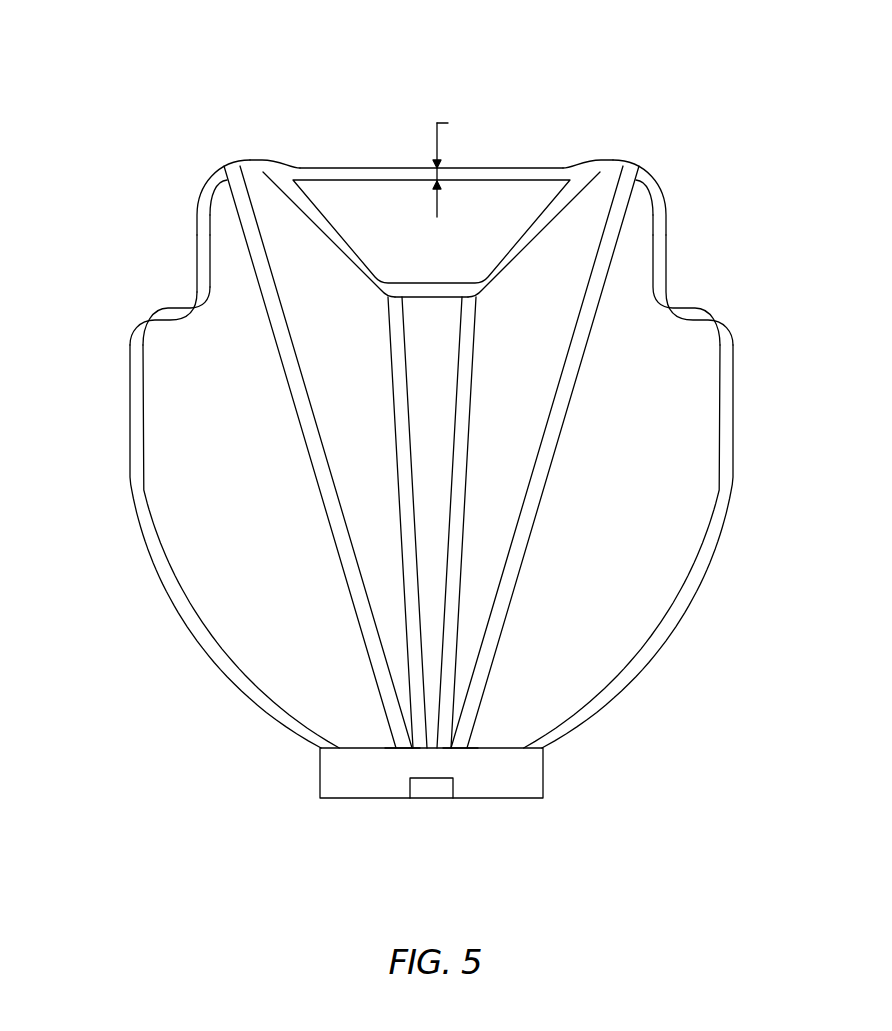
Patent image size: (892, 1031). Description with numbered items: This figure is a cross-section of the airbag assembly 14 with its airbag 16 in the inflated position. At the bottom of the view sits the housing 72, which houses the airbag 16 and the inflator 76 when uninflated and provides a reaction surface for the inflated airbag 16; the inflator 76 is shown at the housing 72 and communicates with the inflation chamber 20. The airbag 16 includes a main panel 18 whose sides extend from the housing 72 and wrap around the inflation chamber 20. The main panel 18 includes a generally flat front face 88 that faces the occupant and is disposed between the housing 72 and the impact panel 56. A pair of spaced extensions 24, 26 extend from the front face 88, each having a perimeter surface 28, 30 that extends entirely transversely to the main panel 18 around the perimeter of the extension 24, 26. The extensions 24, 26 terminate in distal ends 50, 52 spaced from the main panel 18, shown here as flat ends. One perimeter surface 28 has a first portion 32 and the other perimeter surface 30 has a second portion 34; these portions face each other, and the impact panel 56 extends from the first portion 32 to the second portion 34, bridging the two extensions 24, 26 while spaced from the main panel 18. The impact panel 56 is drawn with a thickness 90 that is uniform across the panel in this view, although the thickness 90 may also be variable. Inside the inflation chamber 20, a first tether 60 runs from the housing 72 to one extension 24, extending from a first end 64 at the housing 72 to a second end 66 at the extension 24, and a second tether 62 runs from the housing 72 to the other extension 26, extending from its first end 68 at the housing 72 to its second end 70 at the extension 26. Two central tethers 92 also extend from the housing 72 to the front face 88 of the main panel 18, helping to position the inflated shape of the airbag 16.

The airbag assembly 14 is at (133, 143).
The airbag 16 is at (217, 82).
The main panel 18 is at (733, 360).
The inflation chamber 20 is at (328, 334).
The extension 24 is at (195, 197).
The extension 26 is at (668, 197).
The perimeter surface 28 is at (197, 253).
The perimeter surface 30 is at (667, 253).
The first portion 32 is at (318, 200).
The second portion 34 is at (543, 203).
The distal end 50 is at (233, 163).
The distal end 52 is at (632, 170).
The impact panel 56 is at (405, 170).
The first tether 60 is at (293, 395).
The second tether 62 is at (563, 395).
The first end 64 is at (403, 752).
The second end 66 is at (228, 172).
The first end 68 is at (460, 752).
The second end 70 is at (628, 168).
The housing 72 is at (545, 785).
The inflator 76 is at (433, 800).
The front face 88 is at (172, 307).
The thickness 90 is at (456, 164).
The central tethers 92 is at (397, 385).